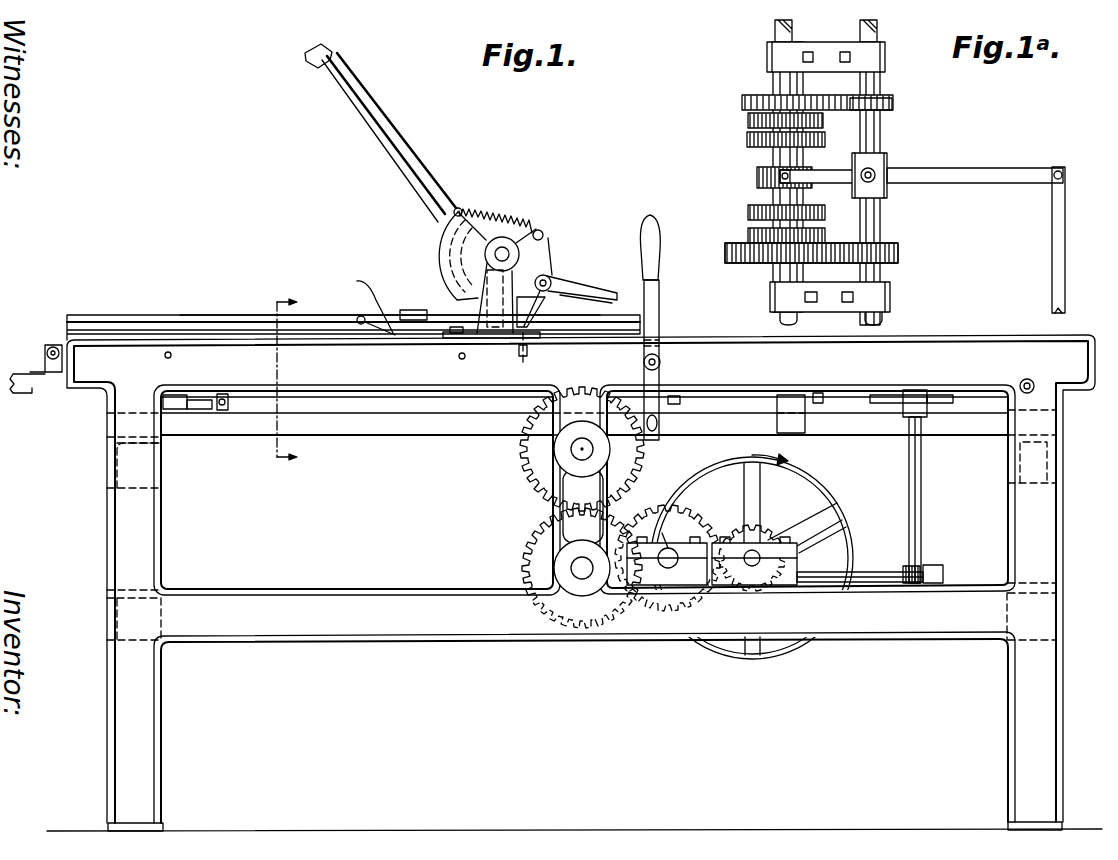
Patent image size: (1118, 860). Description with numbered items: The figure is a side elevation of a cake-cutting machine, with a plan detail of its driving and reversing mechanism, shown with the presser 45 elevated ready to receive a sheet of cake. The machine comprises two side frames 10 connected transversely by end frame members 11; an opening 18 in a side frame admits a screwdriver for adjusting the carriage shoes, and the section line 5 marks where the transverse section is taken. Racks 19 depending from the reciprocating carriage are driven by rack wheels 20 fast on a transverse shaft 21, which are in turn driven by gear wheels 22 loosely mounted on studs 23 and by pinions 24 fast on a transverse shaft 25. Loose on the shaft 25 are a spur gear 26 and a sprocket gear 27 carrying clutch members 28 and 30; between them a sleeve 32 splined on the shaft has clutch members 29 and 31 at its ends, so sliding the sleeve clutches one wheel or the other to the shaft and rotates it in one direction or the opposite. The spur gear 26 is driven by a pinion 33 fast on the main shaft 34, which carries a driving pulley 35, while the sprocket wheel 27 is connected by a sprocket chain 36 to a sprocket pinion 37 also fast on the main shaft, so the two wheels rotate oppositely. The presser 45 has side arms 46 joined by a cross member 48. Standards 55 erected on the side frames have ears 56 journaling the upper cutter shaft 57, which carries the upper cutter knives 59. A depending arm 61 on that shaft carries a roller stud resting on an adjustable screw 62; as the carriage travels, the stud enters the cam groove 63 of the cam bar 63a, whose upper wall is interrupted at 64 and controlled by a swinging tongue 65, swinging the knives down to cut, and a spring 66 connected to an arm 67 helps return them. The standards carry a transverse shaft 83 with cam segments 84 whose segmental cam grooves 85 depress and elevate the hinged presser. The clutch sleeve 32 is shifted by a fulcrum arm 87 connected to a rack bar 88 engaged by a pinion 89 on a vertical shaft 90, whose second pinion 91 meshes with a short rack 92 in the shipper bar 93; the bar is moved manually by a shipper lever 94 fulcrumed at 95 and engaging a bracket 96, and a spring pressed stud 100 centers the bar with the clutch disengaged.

In FIG. 1, the section line 5 is at (295, 379).
In FIG. 1, the side frames 10 is at (116, 535).
In FIG. 1, the end frame members 11 is at (112, 450).
In FIG. 1, the opening in side frame 18 is at (171, 356).
In FIG. 1, the racks 19 is at (24, 372).
In FIG. 1, the rack wheels 20 is at (530, 485).
In FIG. 1, the transverse shaft 21 is at (580, 449).
In FIG. 1, the gear wheels 22 is at (524, 548).
In FIG. 1, the studs 23 is at (581, 568).
In FIG. 1, the pinions 24 is at (662, 533).
In FIG. 1, the transverse pinion shaft 25 is at (672, 557).
In FIG. 1A, the transverse pinion shaft 25 is at (787, 320).
In FIG. 1, the spur gear 26 is at (648, 503).
In FIG. 1A, the spur gear 26 is at (727, 258).
In FIG. 1A, the sprocket gear 27 is at (744, 96).
In FIG. 1A, the clutch member 28 is at (752, 234).
In FIG. 1A, the clutch member 29 is at (748, 212).
In FIG. 1A, the clutch member 30 is at (745, 120).
In FIG. 1A, the clutch member 31 is at (745, 140).
In FIG. 1A, the clutch sleeve 32 is at (760, 172).
In FIG. 1, the pinion 33 is at (767, 540).
In FIG. 1A, the pinion 33 is at (880, 252).
In FIG. 1, the main shaft 34 is at (760, 567).
In FIG. 1A, the main shaft 34 is at (882, 218).
In FIG. 1, the driving pulley 35 is at (813, 481).
In FIG. 1A, the sprocket chain 36 is at (812, 104).
In FIG. 1A, the sprocket pinion 37 is at (890, 102).
In FIG. 1, the presser 45 is at (372, 111).
In FIG. 1, the side arms 46 is at (372, 144).
In FIG. 1, the cross member 48 is at (303, 73).
In FIG. 1, the standards 55 is at (484, 294).
In FIG. 1, the ears 56 is at (580, 298).
In FIG. 1, the upper cutter shaft 57 is at (550, 279).
In FIG. 1, the upper cutter knives 59 is at (600, 286).
In FIG. 1, the depending arm 61 is at (530, 315).
In FIG. 1, the adjustable stud or screw 62 is at (528, 352).
In FIG. 1, the cam groove 63 is at (140, 320).
In FIG. 1, the cam bar 63a is at (214, 316).
In FIG. 1, the interruption 64 is at (360, 283).
In FIG. 1, the swinging tongue 65 is at (360, 316).
In FIG. 1, the spring 66 is at (487, 211).
In FIG. 1, the arm 67 is at (543, 240).
In FIG. 1, the transverse shaft 83 is at (505, 250).
In FIG. 1, the cam segments 84 is at (434, 250).
In FIG. 1, the segmental cam grooves 85 is at (442, 230).
In FIG. 1A, the fulcrum arm 87 is at (905, 166).
In FIG. 1, the rack bar 88 is at (869, 570).
In FIG. 1A, the rack bar 88 is at (1050, 243).
In FIG. 1, the pinion 89 is at (908, 584).
In FIG. 1, the vertical shaft 90 is at (923, 476).
In FIG. 1, the second pinion 91 is at (930, 393).
In FIG. 1, the short rack 92 is at (882, 396).
In FIG. 1, the shipper bar 93 is at (765, 394).
In FIG. 1, the shipper lever 94 is at (660, 296).
In FIG. 1, the fulcrum 95 is at (658, 356).
In FIG. 1, the bracket 96 is at (680, 396).
In FIG. 1, the spring pressed stud 100 is at (1034, 383).